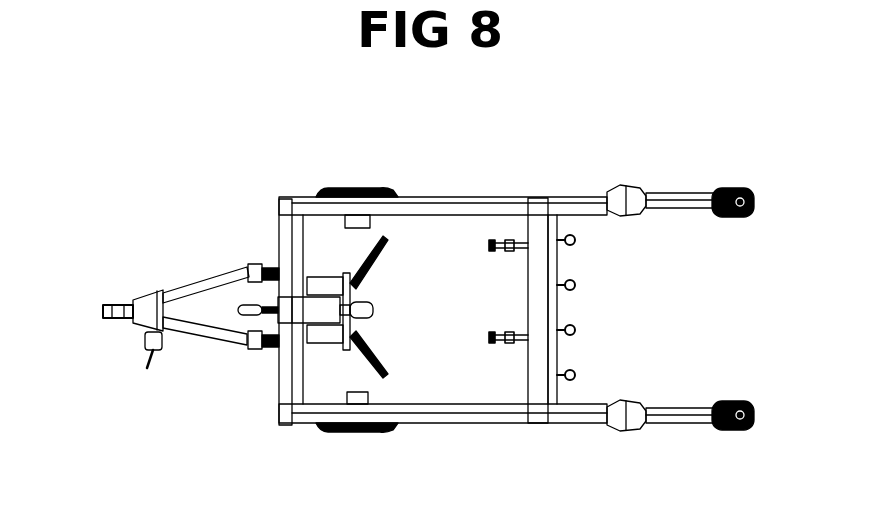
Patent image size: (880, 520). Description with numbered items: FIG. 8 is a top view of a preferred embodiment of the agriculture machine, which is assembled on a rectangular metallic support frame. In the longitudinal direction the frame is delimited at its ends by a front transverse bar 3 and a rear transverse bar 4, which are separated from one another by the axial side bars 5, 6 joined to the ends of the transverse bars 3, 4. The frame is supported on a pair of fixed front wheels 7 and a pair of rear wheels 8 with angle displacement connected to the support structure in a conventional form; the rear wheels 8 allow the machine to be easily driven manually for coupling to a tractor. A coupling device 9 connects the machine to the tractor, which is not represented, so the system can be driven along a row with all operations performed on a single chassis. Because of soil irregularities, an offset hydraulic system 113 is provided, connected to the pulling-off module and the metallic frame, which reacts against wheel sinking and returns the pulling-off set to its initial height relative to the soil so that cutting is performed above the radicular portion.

The front transverse bar 3 is at (287, 247).
The rear transverse bar 4 is at (540, 305).
The axial side bar 5 is at (460, 150).
The axial side bar 6 is at (482, 414).
The fixed front wheels 7 is at (347, 190).
The rear wheels 8 is at (704, 182).
The coupling device 9 is at (107, 305).
The offset hydraulic system 113 is at (488, 245).